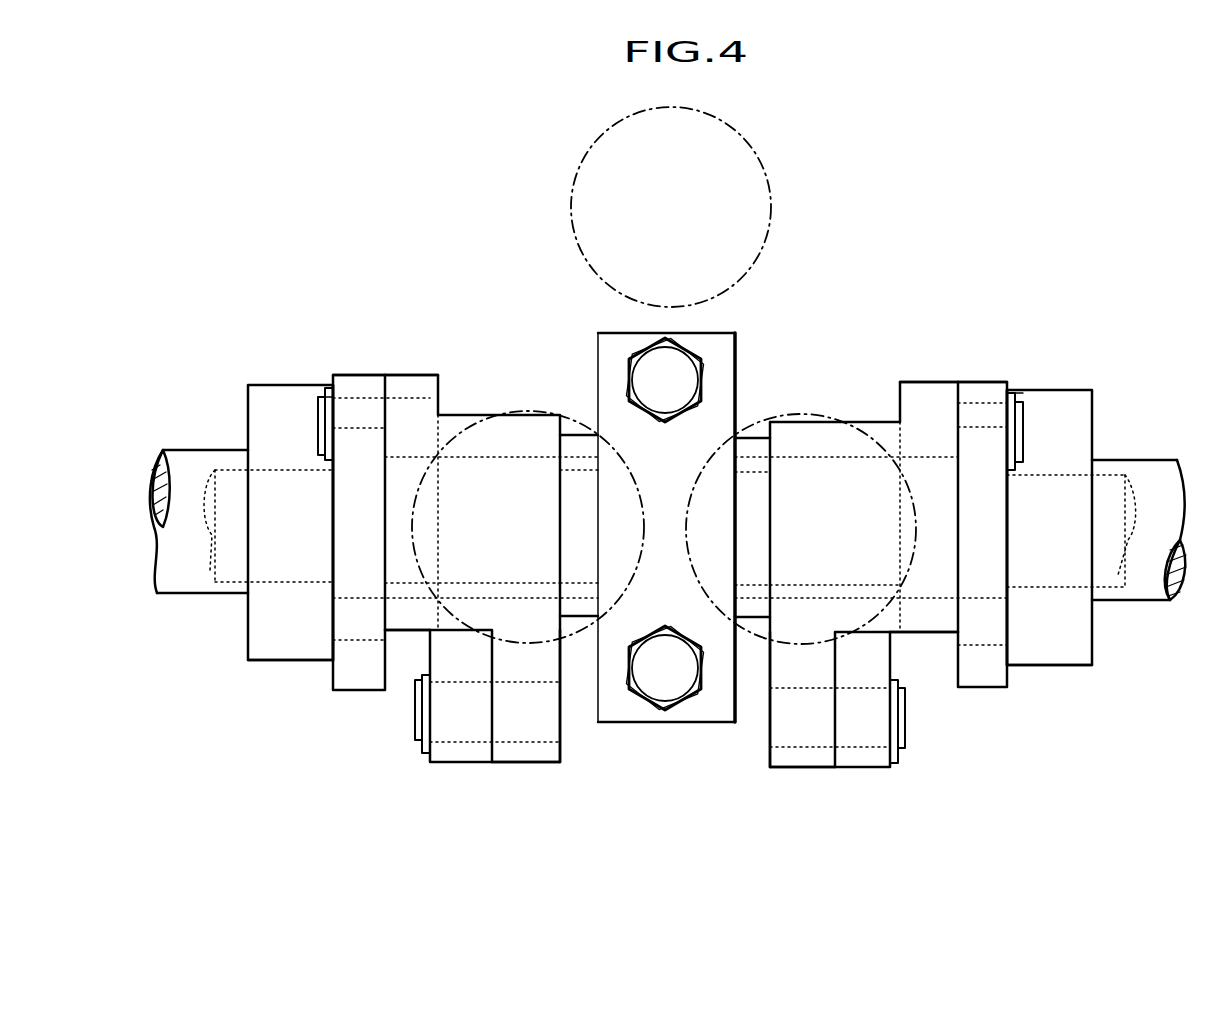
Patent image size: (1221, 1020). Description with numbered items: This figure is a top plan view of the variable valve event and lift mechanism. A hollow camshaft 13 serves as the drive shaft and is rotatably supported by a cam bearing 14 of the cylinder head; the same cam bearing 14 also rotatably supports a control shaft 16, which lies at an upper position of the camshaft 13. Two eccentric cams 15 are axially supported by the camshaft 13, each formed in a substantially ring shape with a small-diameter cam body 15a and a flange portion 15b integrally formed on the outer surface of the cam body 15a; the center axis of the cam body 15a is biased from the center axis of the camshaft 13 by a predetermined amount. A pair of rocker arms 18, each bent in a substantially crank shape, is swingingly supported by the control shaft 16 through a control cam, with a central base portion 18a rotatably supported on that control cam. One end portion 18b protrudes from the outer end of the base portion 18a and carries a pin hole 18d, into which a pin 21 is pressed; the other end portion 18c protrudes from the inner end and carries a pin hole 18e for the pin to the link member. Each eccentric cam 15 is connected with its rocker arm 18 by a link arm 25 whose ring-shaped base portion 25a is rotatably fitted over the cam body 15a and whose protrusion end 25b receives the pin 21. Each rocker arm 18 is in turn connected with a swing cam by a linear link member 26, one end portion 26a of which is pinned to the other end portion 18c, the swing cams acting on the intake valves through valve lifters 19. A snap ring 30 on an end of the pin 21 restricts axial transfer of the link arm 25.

The camshaft 13 is at (186, 458).
The cam bearing 14 is at (742, 378).
The eccentric cam 15 is at (256, 664).
The cam body 15a is at (342, 622).
The flange portion 15b is at (258, 628).
The control shaft 16 is at (207, 563).
The rocker arm 18 is at (478, 412).
The central base portion 18a is at (401, 622).
The one end portion 18b is at (403, 377).
The other end portion 18c is at (515, 768).
The pin hole 18d is at (405, 405).
The pin hole 18e is at (530, 735).
The valve lifter 19 is at (578, 430).
The pin 21 is at (317, 426).
The link arm 25 is at (340, 692).
The base portion 25a is at (357, 668).
The protrusion end 25b is at (358, 383).
The link member 26 is at (472, 768).
The one end portion 26a is at (440, 752).
The snap ring 30 is at (328, 384).